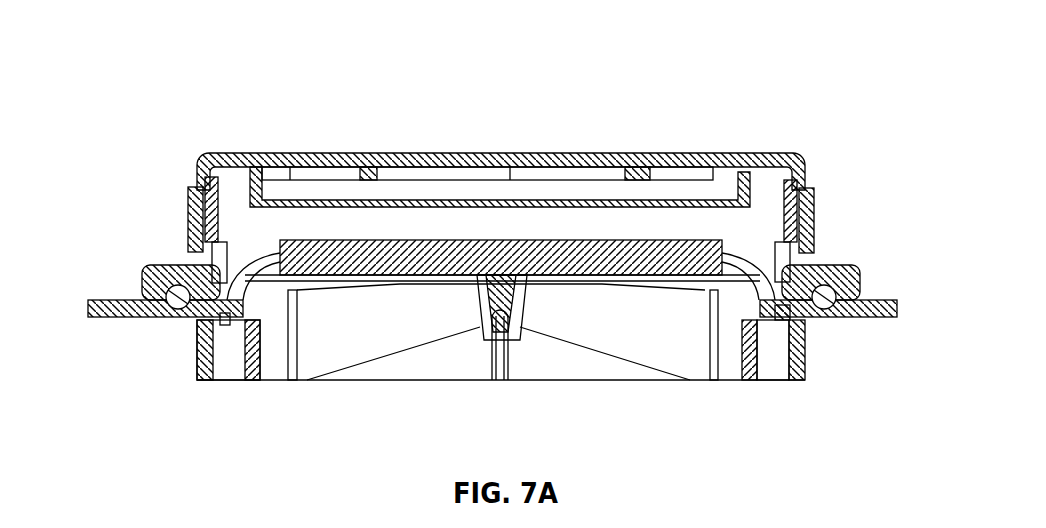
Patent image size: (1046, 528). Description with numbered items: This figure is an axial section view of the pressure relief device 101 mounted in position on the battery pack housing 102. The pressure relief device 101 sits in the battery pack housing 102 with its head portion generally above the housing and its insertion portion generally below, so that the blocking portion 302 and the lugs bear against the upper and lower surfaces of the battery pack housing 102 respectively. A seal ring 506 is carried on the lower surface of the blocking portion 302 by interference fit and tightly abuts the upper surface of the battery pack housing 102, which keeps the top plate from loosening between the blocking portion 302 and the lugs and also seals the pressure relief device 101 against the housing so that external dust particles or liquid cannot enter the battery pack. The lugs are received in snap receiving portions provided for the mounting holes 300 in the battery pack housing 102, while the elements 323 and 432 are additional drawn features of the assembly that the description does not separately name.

The pressure relief device 101 is at (565, 156).
The battery pack housing 102 is at (120, 300).
The blocking portion 302 is at (860, 284).
The mounting holes 300 is at (778, 310).
The seal ring 506 is at (172, 318).
The housing wall 323 is at (805, 370).
The inner wall 432 is at (747, 378).